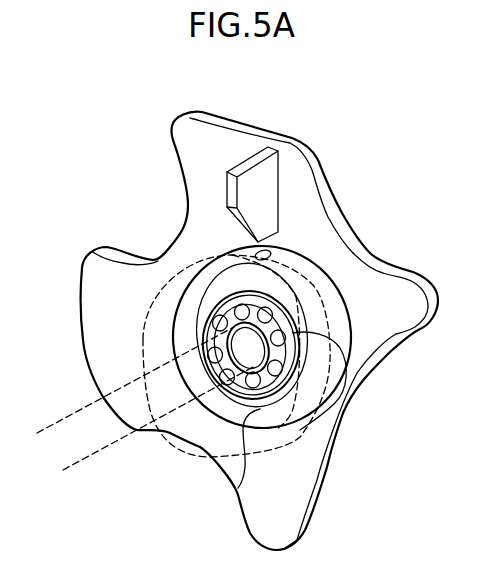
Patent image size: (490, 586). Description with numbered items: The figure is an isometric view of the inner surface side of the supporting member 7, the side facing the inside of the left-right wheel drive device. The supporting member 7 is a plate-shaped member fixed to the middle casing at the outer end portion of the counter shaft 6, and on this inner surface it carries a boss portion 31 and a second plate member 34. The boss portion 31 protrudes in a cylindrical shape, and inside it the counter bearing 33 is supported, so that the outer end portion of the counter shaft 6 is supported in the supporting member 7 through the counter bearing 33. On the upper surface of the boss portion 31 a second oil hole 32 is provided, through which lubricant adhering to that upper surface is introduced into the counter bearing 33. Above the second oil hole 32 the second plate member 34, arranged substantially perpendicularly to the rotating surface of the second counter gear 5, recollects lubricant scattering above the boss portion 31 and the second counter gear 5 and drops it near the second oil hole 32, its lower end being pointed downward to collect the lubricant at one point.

The second counter gear 5 is at (283, 438).
The counter shaft 6 is at (70, 413).
The supporting member 7 is at (129, 141).
The boss portion 31 is at (238, 488).
The second oil hole 32 is at (262, 248).
The counter bearing 33 is at (348, 378).
The second plate member 34 is at (227, 190).